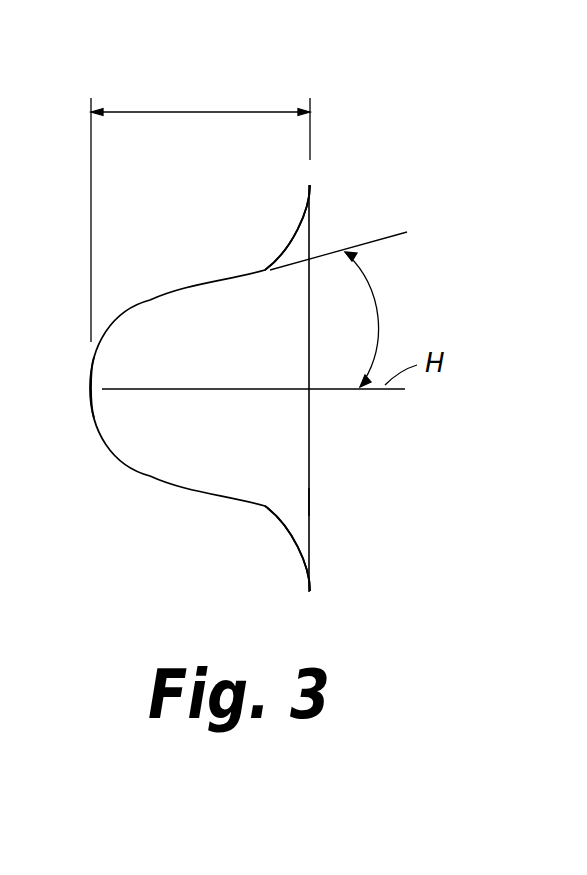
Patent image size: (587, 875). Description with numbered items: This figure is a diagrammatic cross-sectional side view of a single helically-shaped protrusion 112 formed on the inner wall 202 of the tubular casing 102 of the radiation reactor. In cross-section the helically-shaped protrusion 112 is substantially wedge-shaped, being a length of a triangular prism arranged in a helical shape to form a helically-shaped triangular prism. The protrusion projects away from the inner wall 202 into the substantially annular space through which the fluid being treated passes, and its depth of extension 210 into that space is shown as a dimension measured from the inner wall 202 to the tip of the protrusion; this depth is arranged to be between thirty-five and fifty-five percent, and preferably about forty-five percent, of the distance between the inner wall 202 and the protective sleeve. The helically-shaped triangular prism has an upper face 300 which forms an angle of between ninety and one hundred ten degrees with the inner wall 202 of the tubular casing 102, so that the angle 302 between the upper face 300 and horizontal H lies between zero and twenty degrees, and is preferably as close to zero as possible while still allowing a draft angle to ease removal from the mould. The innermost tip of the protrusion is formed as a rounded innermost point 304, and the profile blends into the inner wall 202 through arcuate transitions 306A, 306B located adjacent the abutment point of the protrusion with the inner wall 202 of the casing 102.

The tubular casing 102 is at (310, 427).
The helically-shaped protrusion 112 is at (402, 120).
The inner wall 202 is at (309, 488).
The depth of extension 210 is at (230, 112).
The upper face 300 is at (195, 288).
The angle 302 is at (378, 318).
The rounded innermost point 304 is at (90, 386).
The arcuate transition 306A is at (293, 240).
The arcuate transition 306B is at (273, 520).